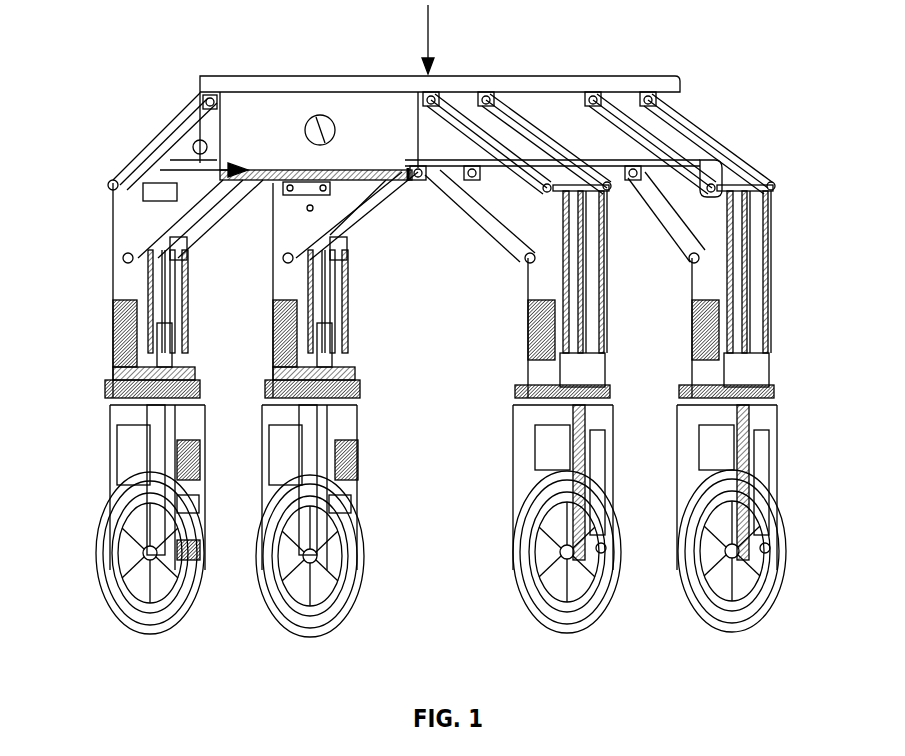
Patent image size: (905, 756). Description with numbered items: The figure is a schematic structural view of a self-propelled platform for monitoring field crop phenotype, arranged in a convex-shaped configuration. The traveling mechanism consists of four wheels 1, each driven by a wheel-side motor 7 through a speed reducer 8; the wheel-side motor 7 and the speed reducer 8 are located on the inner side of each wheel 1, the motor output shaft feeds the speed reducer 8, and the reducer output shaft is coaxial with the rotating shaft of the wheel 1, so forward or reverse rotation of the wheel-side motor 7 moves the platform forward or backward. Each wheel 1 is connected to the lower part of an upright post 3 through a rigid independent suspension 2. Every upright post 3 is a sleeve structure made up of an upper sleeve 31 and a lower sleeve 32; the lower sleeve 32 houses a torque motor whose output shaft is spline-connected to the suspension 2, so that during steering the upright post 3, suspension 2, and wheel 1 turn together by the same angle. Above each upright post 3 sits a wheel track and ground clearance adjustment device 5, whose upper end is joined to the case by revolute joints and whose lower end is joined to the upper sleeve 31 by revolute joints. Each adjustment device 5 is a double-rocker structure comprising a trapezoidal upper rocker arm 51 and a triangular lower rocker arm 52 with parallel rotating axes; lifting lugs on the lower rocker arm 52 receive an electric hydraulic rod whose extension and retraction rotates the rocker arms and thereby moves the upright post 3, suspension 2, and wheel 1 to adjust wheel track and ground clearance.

The wheel 1 is at (447, 321).
The suspension 2 is at (737, 457).
The upright post 3 is at (852, 255).
The upright post upper sleeve 31 is at (737, 295).
The upright post lower sleeve 32 is at (740, 380).
The wheel track and ground clearance adjustment device 5 is at (852, 58).
The upper rocker arm 51 is at (663, 140).
The lower rocker arm 52 is at (658, 227).
The wheel-side motor 7 is at (180, 457).
The speed reducer 8 is at (187, 553).